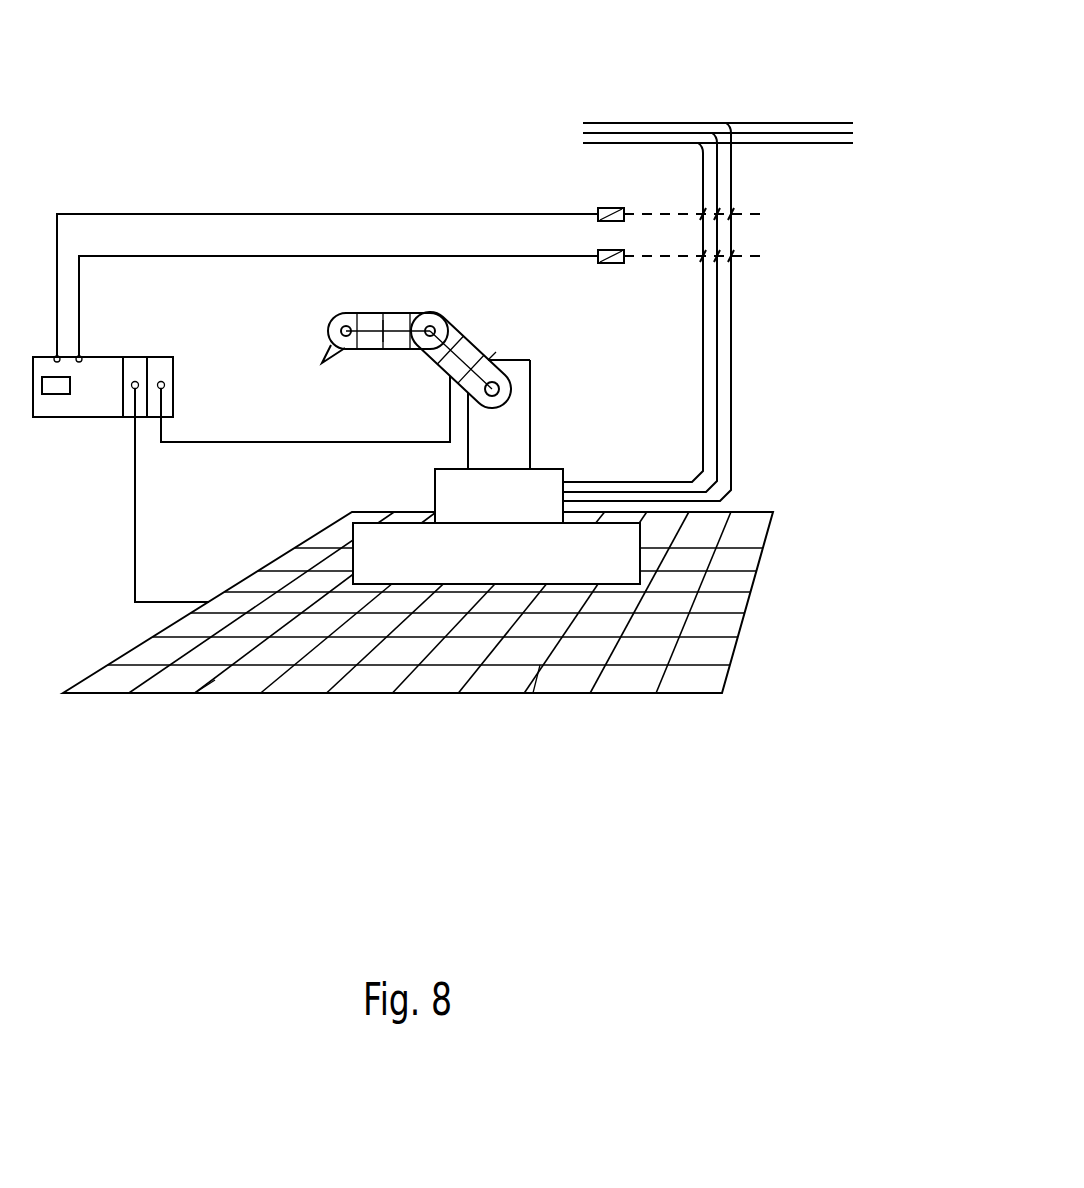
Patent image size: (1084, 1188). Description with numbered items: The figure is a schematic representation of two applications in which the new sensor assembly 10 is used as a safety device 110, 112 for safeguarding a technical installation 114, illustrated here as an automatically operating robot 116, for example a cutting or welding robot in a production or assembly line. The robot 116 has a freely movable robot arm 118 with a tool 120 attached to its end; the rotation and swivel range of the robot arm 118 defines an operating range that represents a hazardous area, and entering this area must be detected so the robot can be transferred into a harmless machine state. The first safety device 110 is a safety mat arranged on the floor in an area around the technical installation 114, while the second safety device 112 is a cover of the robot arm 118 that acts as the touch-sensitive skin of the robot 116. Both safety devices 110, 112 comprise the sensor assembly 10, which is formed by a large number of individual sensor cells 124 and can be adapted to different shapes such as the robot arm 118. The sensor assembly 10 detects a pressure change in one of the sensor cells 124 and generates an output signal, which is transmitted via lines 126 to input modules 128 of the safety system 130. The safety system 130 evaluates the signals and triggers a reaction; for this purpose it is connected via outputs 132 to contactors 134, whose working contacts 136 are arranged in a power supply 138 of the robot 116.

The sensor assembly 10 is at (488, 357).
The safety device 110 is at (390, 772).
The safety device 112 is at (492, 337).
The technical installation 114 is at (600, 385).
The robot 116 is at (511, 442).
The robot arm 118 is at (362, 312).
The tool 120 is at (337, 358).
The sensor cells 124 is at (397, 351).
The lines 126 is at (303, 444).
The input modules 128 is at (163, 355).
The safety system 130 is at (90, 400).
The outputs 132 is at (81, 356).
The contactors 134 is at (603, 248).
The working contacts 136 is at (718, 233).
The power supply 138 is at (708, 140).